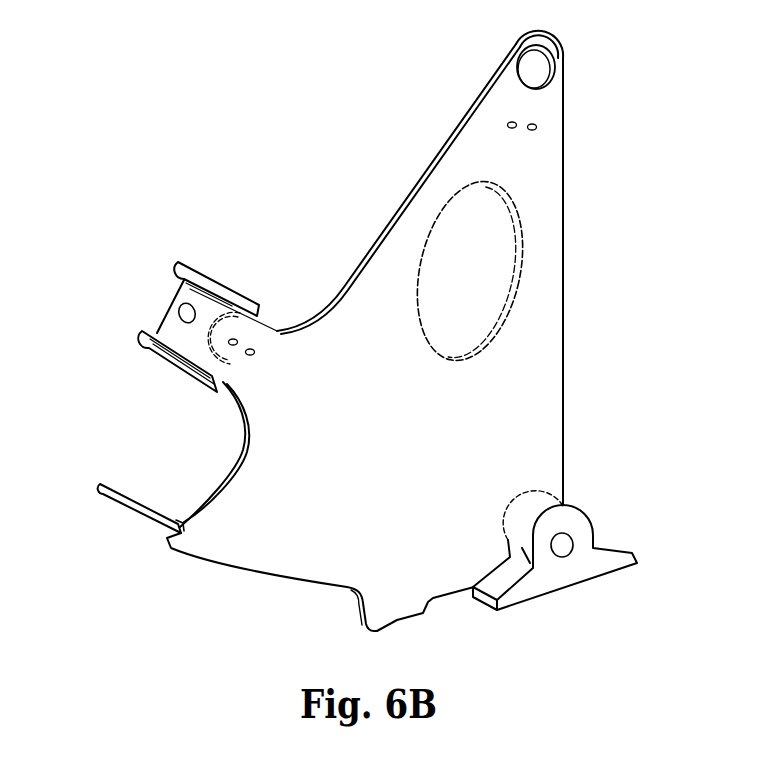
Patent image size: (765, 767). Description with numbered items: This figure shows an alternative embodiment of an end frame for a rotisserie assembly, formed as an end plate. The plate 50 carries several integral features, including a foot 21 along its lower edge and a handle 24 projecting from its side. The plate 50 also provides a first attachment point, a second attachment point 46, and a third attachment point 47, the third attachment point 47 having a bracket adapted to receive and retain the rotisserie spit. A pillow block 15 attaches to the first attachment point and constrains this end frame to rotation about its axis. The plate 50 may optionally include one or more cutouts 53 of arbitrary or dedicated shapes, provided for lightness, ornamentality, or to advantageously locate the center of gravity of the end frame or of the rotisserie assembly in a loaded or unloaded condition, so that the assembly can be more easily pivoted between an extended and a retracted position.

The pillow block 15 is at (600, 546).
The foot 21 is at (395, 630).
The handle 24 is at (137, 517).
The second attachment point 46 is at (517, 71).
The third attachment point 47 is at (175, 308).
The plate 50 is at (361, 258).
The cutouts 53 is at (462, 197).